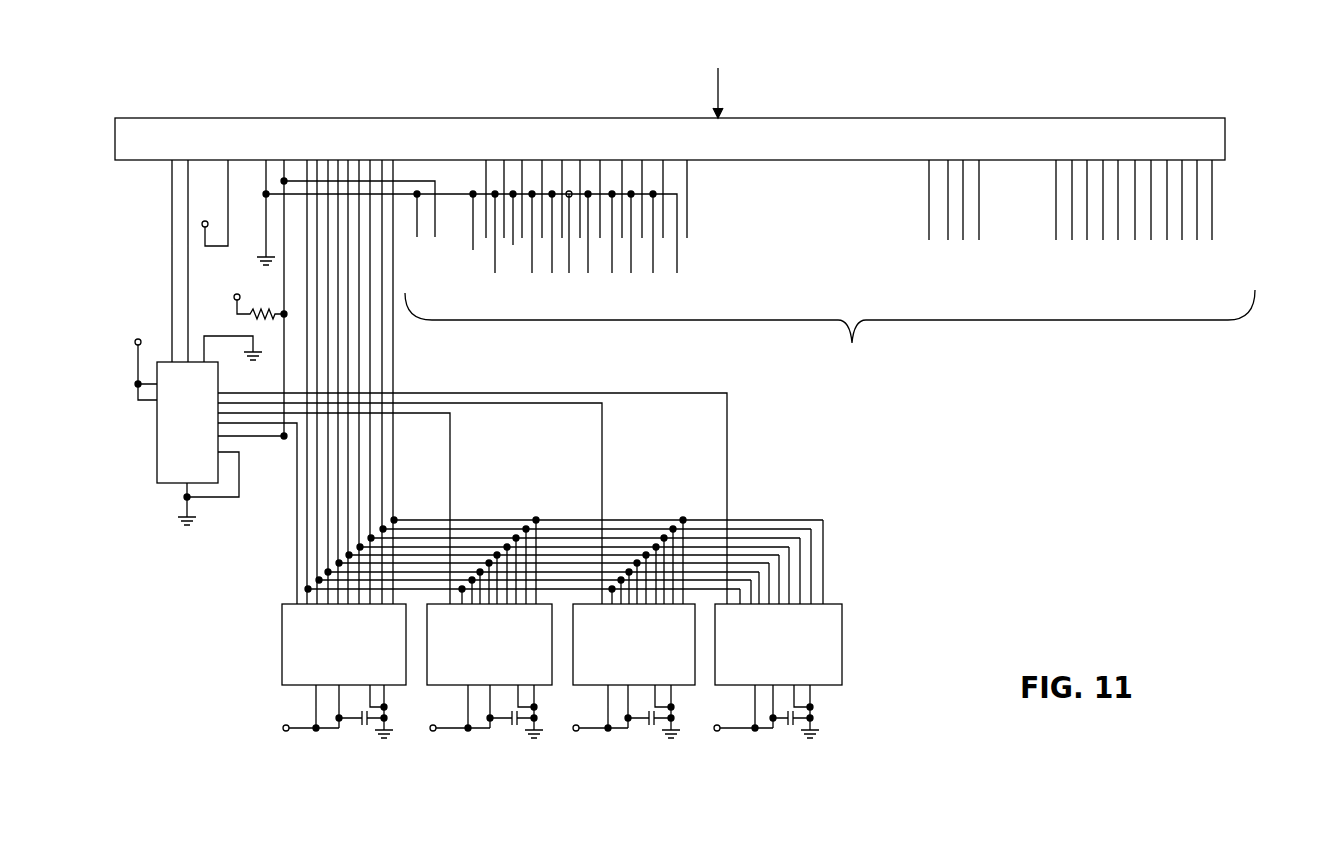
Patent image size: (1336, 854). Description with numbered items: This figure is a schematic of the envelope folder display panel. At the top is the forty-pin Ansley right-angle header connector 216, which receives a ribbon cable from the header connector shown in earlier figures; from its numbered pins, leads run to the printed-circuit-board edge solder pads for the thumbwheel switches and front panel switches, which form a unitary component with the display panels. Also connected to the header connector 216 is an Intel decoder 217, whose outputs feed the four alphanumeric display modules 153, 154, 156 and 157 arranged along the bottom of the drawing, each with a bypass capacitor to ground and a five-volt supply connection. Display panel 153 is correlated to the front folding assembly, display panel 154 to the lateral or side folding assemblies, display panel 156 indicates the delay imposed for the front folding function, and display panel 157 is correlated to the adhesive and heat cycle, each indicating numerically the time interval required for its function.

The 40-pin Ansley right-angle header connector 216 is at (1225, 133).
The Intel 3205 decoder 217 is at (171, 452).
The display panel 153 is at (317, 665).
The display panel 154 is at (452, 665).
The display panel 156 is at (597, 665).
The display panel 157 is at (742, 665).